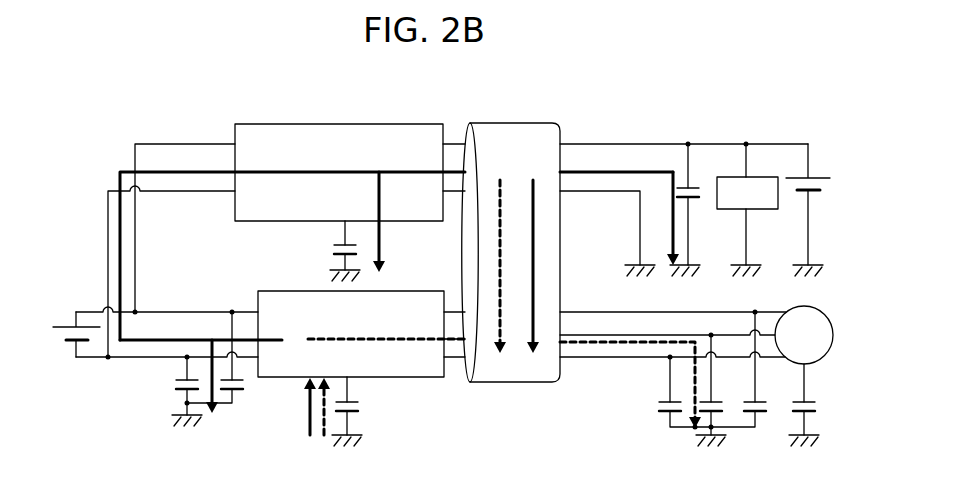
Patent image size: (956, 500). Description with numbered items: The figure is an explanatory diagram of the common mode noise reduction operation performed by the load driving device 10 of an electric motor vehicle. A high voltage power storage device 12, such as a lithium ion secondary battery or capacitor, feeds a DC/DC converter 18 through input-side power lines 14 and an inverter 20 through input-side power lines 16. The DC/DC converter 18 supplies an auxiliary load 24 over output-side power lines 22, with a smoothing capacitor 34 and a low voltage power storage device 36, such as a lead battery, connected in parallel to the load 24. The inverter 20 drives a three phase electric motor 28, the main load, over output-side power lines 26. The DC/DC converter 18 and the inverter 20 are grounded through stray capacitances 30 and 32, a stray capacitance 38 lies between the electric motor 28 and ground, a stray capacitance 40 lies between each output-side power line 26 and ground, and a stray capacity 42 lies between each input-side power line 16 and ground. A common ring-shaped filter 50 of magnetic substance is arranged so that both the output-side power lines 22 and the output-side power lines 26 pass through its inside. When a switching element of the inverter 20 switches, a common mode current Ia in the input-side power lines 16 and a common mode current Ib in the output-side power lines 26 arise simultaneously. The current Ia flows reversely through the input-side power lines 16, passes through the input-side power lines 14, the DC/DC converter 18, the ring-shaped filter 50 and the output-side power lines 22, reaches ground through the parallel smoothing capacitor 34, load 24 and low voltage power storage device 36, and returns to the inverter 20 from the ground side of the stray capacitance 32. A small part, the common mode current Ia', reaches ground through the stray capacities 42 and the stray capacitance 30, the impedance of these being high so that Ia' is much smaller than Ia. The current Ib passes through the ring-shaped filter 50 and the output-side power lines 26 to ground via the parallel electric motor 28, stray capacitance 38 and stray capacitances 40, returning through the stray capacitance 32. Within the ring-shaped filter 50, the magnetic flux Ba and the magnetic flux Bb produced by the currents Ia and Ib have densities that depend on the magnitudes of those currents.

The load driving device 10 is at (511, 83).
The high voltage power storage device 12 is at (65, 336).
The input-side power lines 14 is at (162, 134).
The input-side power lines 16 is at (162, 352).
The DC/DC converter 18 is at (343, 124).
The inverter 20 is at (418, 291).
The output-side power lines 22 is at (600, 132).
The load 24 is at (760, 212).
The output-side power lines 26 is at (601, 293).
The electric motor 28 is at (812, 310).
The stray capacitance 30 is at (334, 249).
The stray capacitance 32 is at (358, 408).
The smoothing capacitor 34 is at (703, 193).
The low voltage power storage device 36 is at (818, 192).
The stray capacitance 38 is at (817, 407).
The stray capacitance 40 is at (660, 405).
The stray capacity 42 is at (177, 392).
The ring-shaped filter 50 is at (496, 124).
The common mode current Ia is at (433, 292).
The common mode current Ia' is at (265, 282).
The common mode current Ib is at (332, 420).
The magnetic flux Ba is at (538, 231).
The magnetic flux Bb is at (497, 239).